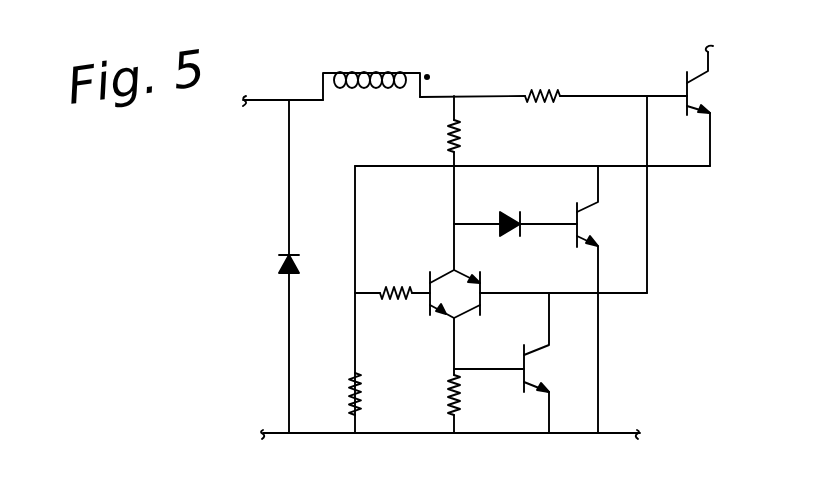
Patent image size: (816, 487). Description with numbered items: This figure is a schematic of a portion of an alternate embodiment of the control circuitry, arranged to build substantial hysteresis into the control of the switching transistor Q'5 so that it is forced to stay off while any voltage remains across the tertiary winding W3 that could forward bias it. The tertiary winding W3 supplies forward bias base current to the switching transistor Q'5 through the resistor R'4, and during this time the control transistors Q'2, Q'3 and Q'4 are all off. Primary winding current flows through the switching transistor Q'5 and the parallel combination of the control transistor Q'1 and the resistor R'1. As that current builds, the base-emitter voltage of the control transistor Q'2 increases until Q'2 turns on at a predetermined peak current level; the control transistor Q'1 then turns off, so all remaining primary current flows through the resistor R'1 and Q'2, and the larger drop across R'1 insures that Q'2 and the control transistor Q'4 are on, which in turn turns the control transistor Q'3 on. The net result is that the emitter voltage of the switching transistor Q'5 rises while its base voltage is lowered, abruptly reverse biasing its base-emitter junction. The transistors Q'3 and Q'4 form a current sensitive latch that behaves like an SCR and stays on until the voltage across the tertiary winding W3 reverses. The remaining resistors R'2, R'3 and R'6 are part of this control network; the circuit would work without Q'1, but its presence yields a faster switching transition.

The tertiary winding W3 is at (376, 94).
The resistor R'1 is at (343, 394).
The resistor R'2 is at (469, 183).
The resistor R'3 is at (439, 404).
The resistor R'4 is at (542, 86).
The resistor R'6 is at (392, 283).
The control transistor Q'1 is at (535, 299).
The control transistor Q'2 is at (452, 282).
The control transistor Q'3 is at (460, 323).
The control transistor Q'4 is at (510, 363).
The switching transistor Q'5 is at (688, 109).